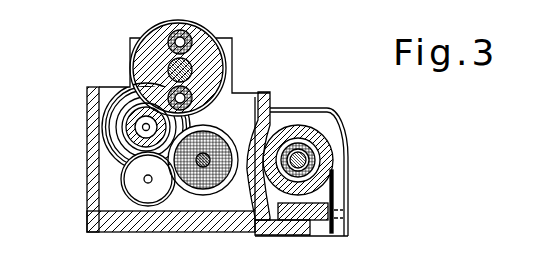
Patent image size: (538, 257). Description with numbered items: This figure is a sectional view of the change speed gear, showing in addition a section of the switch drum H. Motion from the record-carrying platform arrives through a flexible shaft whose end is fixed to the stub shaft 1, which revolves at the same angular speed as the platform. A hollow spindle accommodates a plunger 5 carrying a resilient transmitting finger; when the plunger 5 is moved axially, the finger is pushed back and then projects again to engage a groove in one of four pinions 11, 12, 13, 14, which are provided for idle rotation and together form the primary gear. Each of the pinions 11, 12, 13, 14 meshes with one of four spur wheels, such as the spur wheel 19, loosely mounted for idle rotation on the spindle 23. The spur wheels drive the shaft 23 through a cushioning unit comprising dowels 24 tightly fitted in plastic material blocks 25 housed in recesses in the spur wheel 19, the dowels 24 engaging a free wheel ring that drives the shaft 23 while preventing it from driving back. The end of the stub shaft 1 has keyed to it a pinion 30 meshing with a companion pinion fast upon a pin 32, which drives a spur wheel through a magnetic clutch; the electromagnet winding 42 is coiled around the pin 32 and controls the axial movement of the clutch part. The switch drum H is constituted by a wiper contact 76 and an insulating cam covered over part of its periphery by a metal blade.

The stub shaft 1 is at (146, 181).
The plunger 5 is at (115, 92).
The pinion 11 is at (128, 134).
The pinion 12 is at (121, 132).
The pinion 13 is at (112, 124).
The pinion 14 is at (105, 103).
The spur wheel 19 is at (213, 38).
The spindle 23 is at (193, 65).
The dowels 24 is at (145, 45).
The plastic material blocks 25 is at (187, 33).
The pinion 30 is at (132, 184).
The pin 32 is at (163, 193).
The winding 42 is at (223, 190).
The switch drum H is at (332, 153).
The wiper contact 76 is at (333, 192).